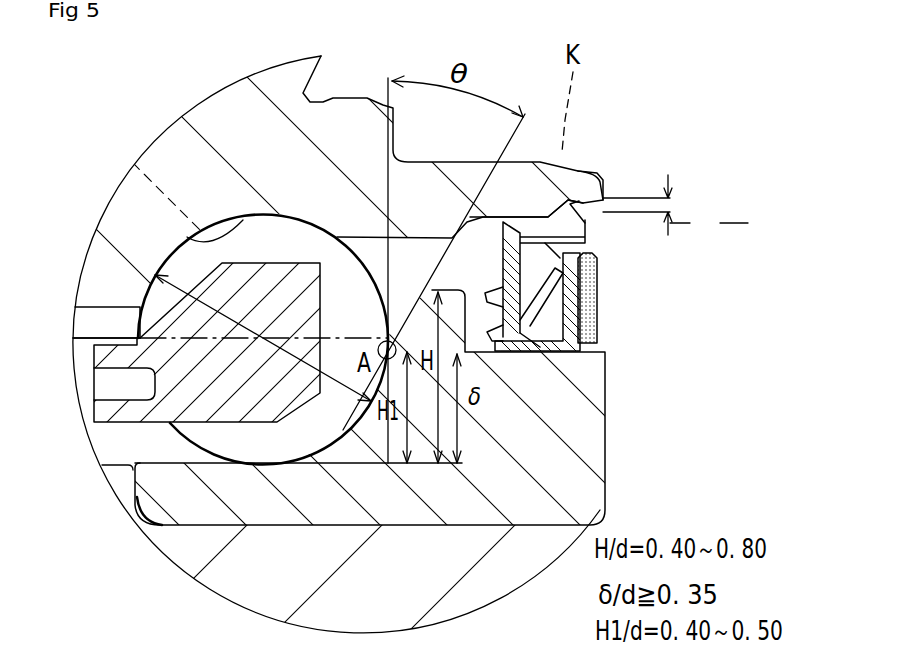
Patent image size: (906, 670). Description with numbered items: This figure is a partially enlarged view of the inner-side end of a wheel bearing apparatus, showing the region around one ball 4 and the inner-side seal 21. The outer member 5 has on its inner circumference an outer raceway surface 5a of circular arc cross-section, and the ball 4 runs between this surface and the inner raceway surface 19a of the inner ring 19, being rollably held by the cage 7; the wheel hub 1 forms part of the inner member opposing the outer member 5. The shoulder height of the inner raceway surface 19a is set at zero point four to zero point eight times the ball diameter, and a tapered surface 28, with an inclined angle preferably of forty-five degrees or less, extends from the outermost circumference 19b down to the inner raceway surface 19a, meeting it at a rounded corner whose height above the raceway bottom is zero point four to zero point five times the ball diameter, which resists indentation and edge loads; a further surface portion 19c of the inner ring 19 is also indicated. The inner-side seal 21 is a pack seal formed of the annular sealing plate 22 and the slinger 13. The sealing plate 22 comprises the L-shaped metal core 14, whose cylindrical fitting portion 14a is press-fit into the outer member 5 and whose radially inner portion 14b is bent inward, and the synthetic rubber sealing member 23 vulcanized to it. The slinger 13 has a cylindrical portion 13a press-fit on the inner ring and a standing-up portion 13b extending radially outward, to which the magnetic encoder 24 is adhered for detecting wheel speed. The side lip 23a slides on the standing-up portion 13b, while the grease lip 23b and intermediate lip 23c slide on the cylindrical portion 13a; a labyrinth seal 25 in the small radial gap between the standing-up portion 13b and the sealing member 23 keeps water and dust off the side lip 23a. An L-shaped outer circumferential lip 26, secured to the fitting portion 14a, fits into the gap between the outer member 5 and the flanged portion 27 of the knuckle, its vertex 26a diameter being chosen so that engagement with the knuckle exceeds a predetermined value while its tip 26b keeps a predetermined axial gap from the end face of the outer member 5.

The wheel hub 1 is at (232, 590).
The ball 4 is at (347, 335).
The outer member 5 is at (400, 335).
The outer raceway surface 5a is at (187, 237).
The cage 7 is at (125, 358).
The slinger 13 is at (623, 346).
The cylindrical portion 13a is at (560, 352).
The standing-up portion 13b is at (575, 345).
The metal core 14 is at (664, 296).
The cylindrical fitting portion 14a is at (580, 258).
The radially inner portion 14b is at (590, 280).
The inner ring 19 is at (400, 335).
The inner raceway surface 19a is at (308, 456).
The outermost circumference 19b is at (450, 290).
The inner ring seal land 19c is at (485, 360).
The inner-side seal 21 is at (627, 263).
The sealing plate 22 is at (639, 320).
The sealing member 23 is at (609, 290).
The side lip 23a is at (560, 308).
The grease lip 23b is at (563, 322).
The intermediate lip 23c is at (597, 347).
The magnetic encoder 24 is at (507, 276).
The labyrinth seal 25 is at (568, 240).
The outer circumferential lip 26 is at (572, 174).
The vertex 26a is at (603, 198).
The tip 26b is at (594, 172).
The flanged portion 27 is at (682, 185).
The tapered surface 28 is at (388, 311).